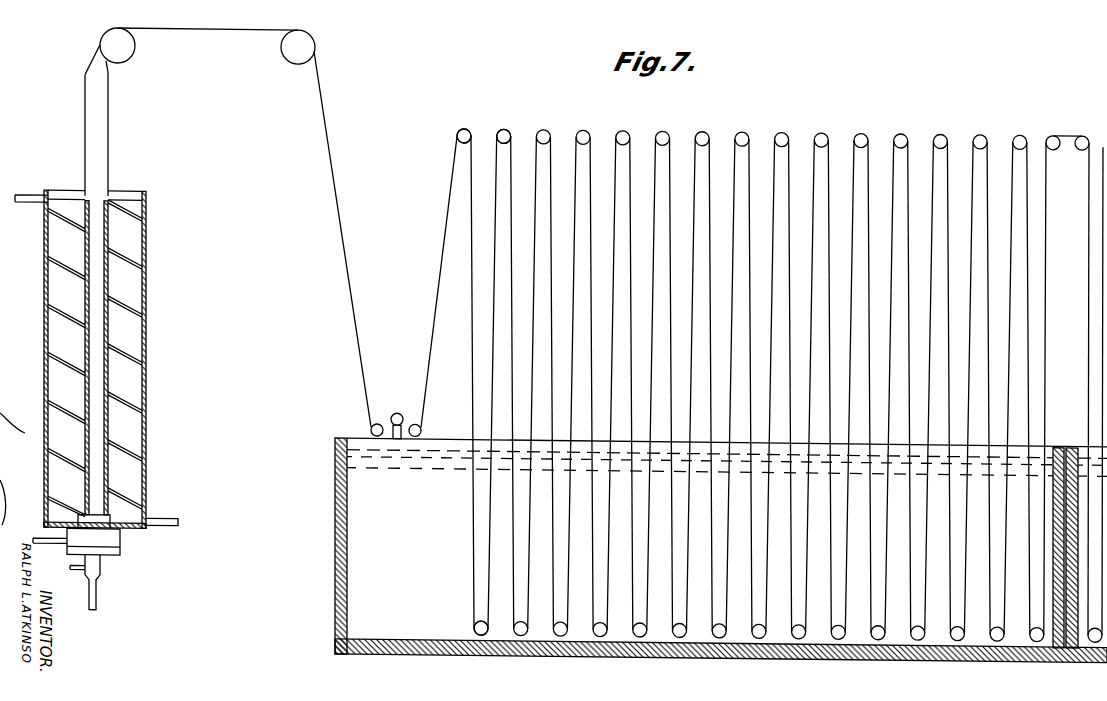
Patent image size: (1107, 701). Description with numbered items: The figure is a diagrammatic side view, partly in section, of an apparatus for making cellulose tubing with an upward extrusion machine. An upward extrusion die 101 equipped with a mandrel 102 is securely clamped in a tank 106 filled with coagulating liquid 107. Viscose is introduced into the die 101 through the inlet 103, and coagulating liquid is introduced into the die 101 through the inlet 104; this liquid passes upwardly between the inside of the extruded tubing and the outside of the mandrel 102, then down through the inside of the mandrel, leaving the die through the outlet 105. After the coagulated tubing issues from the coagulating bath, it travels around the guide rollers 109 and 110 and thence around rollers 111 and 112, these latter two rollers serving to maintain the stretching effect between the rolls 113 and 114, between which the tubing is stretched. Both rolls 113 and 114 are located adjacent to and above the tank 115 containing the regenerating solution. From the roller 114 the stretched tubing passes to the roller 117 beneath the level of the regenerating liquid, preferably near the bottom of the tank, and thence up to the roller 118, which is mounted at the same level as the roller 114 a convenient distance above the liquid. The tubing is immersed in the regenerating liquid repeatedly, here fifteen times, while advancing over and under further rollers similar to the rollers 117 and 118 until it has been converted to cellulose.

The upward extrusion die 101 is at (118, 549).
The mandrel 102 is at (97, 480).
The inlet 103 is at (52, 548).
The inlet 104 is at (78, 575).
The outlet 105 is at (97, 608).
The tank 106 is at (146, 375).
The coagulating liquid 107 is at (59, 200).
The guide roller 109 is at (118, 66).
The guide roller 110 is at (296, 66).
The roller 111 is at (370, 429).
The roller 112 is at (397, 414).
The roll 113 is at (421, 429).
The roll 114 is at (465, 133).
The tank 115 is at (336, 525).
The roller 117 is at (480, 636).
The roller 118 is at (504, 131).